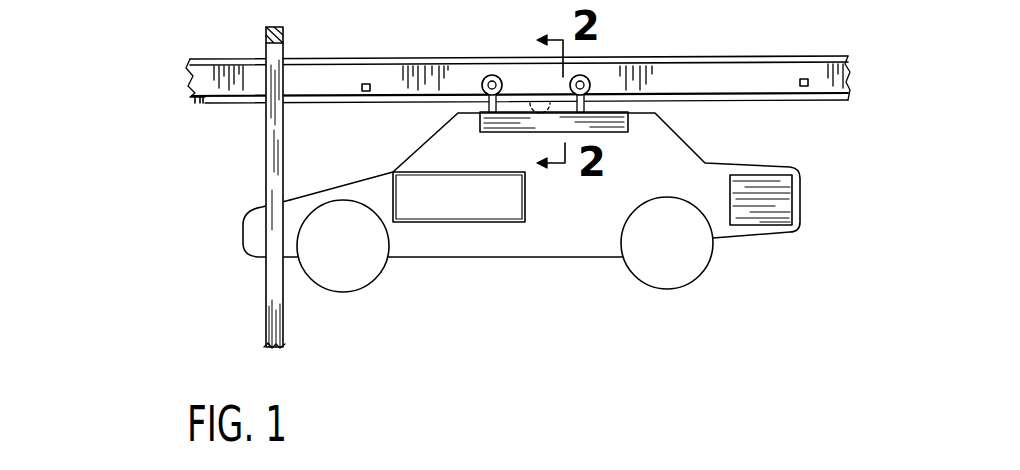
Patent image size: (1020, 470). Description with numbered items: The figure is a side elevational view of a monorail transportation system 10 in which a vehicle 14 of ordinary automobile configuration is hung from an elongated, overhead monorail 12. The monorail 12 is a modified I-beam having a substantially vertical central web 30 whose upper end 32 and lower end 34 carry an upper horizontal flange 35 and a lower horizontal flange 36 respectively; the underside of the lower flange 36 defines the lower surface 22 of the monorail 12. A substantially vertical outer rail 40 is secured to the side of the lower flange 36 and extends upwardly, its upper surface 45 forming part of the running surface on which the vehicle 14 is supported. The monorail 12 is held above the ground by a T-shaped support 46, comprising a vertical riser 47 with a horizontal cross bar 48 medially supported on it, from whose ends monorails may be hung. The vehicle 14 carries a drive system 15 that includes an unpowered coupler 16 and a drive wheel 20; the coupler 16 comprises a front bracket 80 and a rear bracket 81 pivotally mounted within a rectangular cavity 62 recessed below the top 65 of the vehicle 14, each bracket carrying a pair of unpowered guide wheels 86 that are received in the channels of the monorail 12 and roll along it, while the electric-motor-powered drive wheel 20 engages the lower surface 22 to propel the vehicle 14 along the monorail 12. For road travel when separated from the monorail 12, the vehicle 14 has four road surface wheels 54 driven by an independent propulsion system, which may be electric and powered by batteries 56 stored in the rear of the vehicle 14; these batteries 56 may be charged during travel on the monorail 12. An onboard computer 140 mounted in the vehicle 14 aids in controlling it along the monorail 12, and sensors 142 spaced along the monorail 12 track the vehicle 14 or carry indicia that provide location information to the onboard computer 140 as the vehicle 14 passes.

The monorail transportation system 10 is at (192, 218).
The overhead monorail 12 is at (800, 26).
The vehicle 14 is at (521, 185).
The drive system 15 is at (509, 70).
The unpowered coupler 16 is at (469, 76).
The drive wheel 20 is at (532, 96).
The lower surface 22 is at (236, 106).
The central web 30 is at (185, 82).
The upper end 32 is at (190, 66).
The lower end 34 is at (198, 98).
The upper horizontal flange 35 is at (835, 56).
The lower horizontal flange 36 is at (384, 108).
The outer rail 40 is at (739, 103).
The upper surface of outer rail 45 is at (722, 91).
The T-shaped support 46 is at (297, 178).
The vertical riser 47 is at (267, 295).
The horizontal cross bar 48 is at (279, 33).
The road surface wheels 54 is at (357, 291).
The batteries 56 is at (765, 228).
The rectangular cavity 62 is at (625, 139).
The top of vehicle 65 is at (640, 110).
The front bracket 80 is at (482, 97).
The rear bracket 81 is at (586, 88).
The guide wheels 86 is at (477, 73).
The onboard computer 140 is at (478, 223).
The sensors 142 is at (365, 84).